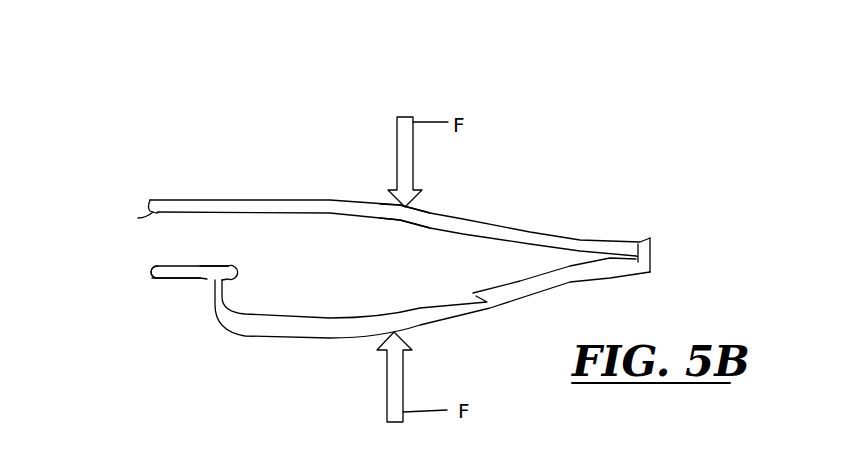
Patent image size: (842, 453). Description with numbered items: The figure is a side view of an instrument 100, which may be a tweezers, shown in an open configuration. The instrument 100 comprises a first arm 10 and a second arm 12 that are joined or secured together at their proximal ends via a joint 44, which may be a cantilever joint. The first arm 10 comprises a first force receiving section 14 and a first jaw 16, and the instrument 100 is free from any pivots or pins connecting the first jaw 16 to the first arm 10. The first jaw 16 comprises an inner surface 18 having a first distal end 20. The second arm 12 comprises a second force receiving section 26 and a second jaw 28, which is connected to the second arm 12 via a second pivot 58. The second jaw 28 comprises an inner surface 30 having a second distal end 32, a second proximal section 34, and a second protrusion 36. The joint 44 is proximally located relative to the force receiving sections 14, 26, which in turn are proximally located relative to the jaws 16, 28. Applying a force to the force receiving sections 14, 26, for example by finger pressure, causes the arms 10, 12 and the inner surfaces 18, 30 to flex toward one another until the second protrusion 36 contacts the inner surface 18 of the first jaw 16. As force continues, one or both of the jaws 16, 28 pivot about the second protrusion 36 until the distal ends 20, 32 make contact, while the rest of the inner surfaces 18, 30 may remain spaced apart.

The instrument 100 is at (586, 145).
The first arm 10 is at (266, 198).
The second arm 12 is at (259, 338).
The first force receiving section 14 is at (403, 208).
The first jaw 16 is at (195, 200).
The inner surface 18 is at (223, 212).
The first distal end 20 is at (138, 218).
The second force receiving section 26 is at (374, 326).
The second jaw 28 is at (158, 279).
The inner surface 30 is at (178, 265).
The second distal end 32 is at (160, 265).
The second proximal section 34 is at (223, 263).
The second protrusion 36 is at (243, 272).
The joint 44 is at (651, 238).
The second pivot 58 is at (207, 281).